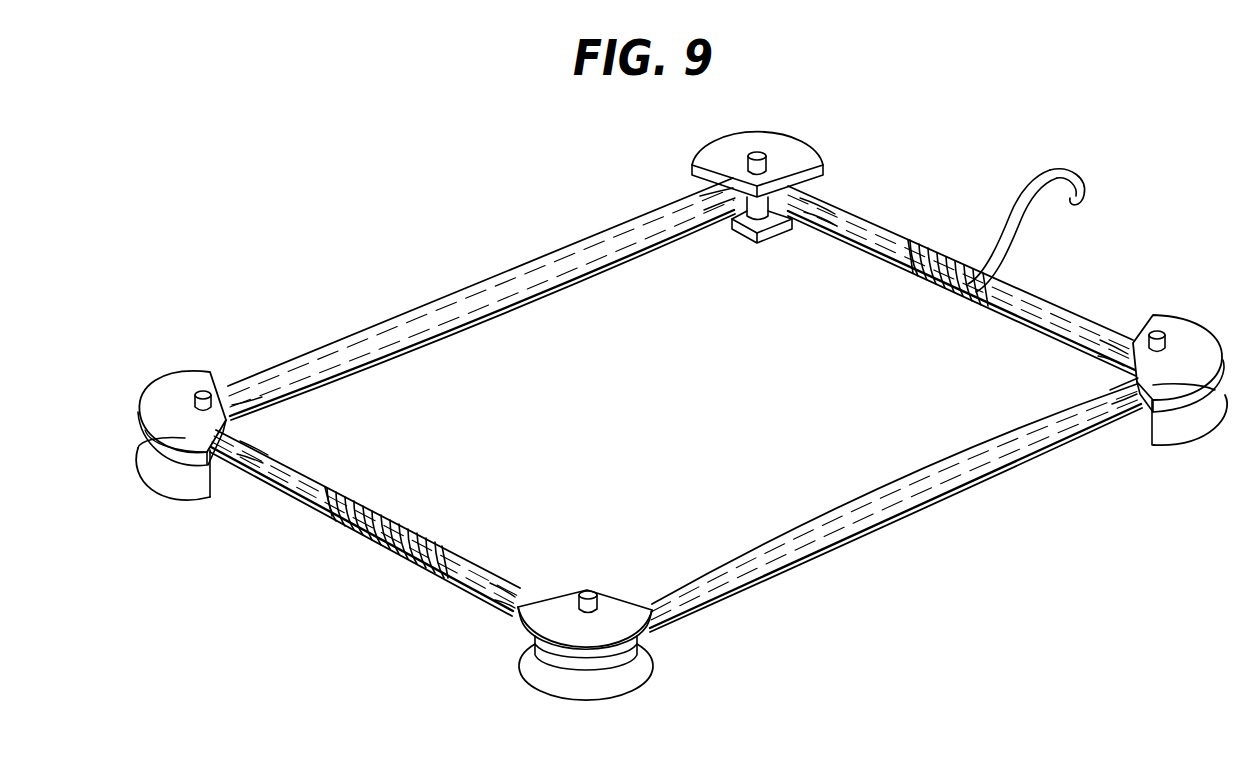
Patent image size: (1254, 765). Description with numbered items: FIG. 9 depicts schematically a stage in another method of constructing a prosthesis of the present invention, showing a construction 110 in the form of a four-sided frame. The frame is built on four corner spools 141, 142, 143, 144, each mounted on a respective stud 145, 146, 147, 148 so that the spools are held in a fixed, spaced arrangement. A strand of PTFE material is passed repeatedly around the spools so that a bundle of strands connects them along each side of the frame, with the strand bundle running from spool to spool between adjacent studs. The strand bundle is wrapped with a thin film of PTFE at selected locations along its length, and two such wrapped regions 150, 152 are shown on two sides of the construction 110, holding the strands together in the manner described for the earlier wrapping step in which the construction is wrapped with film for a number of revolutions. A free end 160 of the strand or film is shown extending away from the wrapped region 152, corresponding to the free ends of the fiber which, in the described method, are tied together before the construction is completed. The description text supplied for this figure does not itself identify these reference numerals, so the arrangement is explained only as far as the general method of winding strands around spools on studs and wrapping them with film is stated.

The frame assembly 110 is at (940, 551).
The corner support foot 141 is at (177, 373).
The corner support foot 142 is at (767, 130).
The corner support foot 143 is at (1197, 317).
The corner support foot 144 is at (650, 672).
The locating pin 145 is at (218, 387).
The locating pin 146 is at (768, 157).
The locating pin 147 is at (1147, 330).
The locating pin 148 is at (597, 590).
The wrapped strap section 150 is at (420, 521).
The wrapped strap section 152 is at (932, 292).
The strap free end 160 is at (1050, 170).